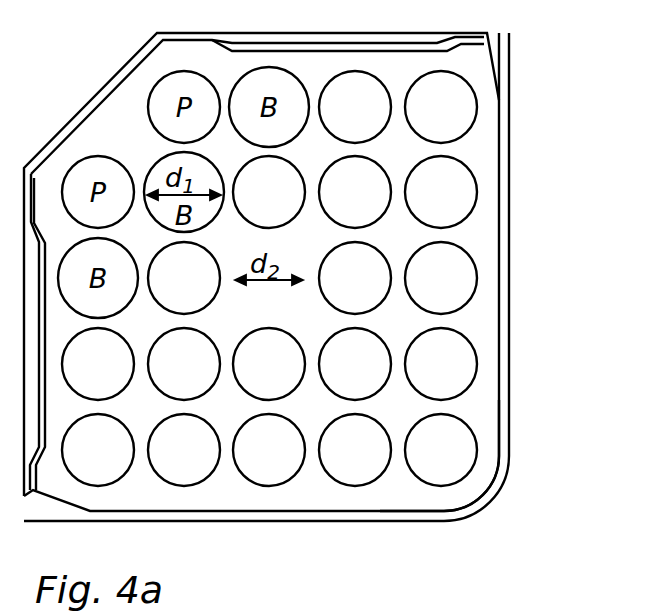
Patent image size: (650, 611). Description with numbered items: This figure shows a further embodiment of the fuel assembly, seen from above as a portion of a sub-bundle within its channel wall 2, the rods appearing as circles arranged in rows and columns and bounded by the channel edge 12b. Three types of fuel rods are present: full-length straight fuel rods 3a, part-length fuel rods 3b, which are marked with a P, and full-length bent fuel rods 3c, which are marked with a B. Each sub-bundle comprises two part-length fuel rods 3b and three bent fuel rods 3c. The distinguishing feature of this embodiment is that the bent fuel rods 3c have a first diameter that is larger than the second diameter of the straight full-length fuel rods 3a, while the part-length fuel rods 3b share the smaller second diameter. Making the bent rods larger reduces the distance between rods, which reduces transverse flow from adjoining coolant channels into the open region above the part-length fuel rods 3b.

The plate 2 is at (505, 240).
The full-length straight fuel rods 3a is at (455, 362).
The part-length fuel rods 3b is at (187, 85).
The full-length bent fuel rods 3c is at (273, 127).
The plate edge rim 12b is at (488, 442).